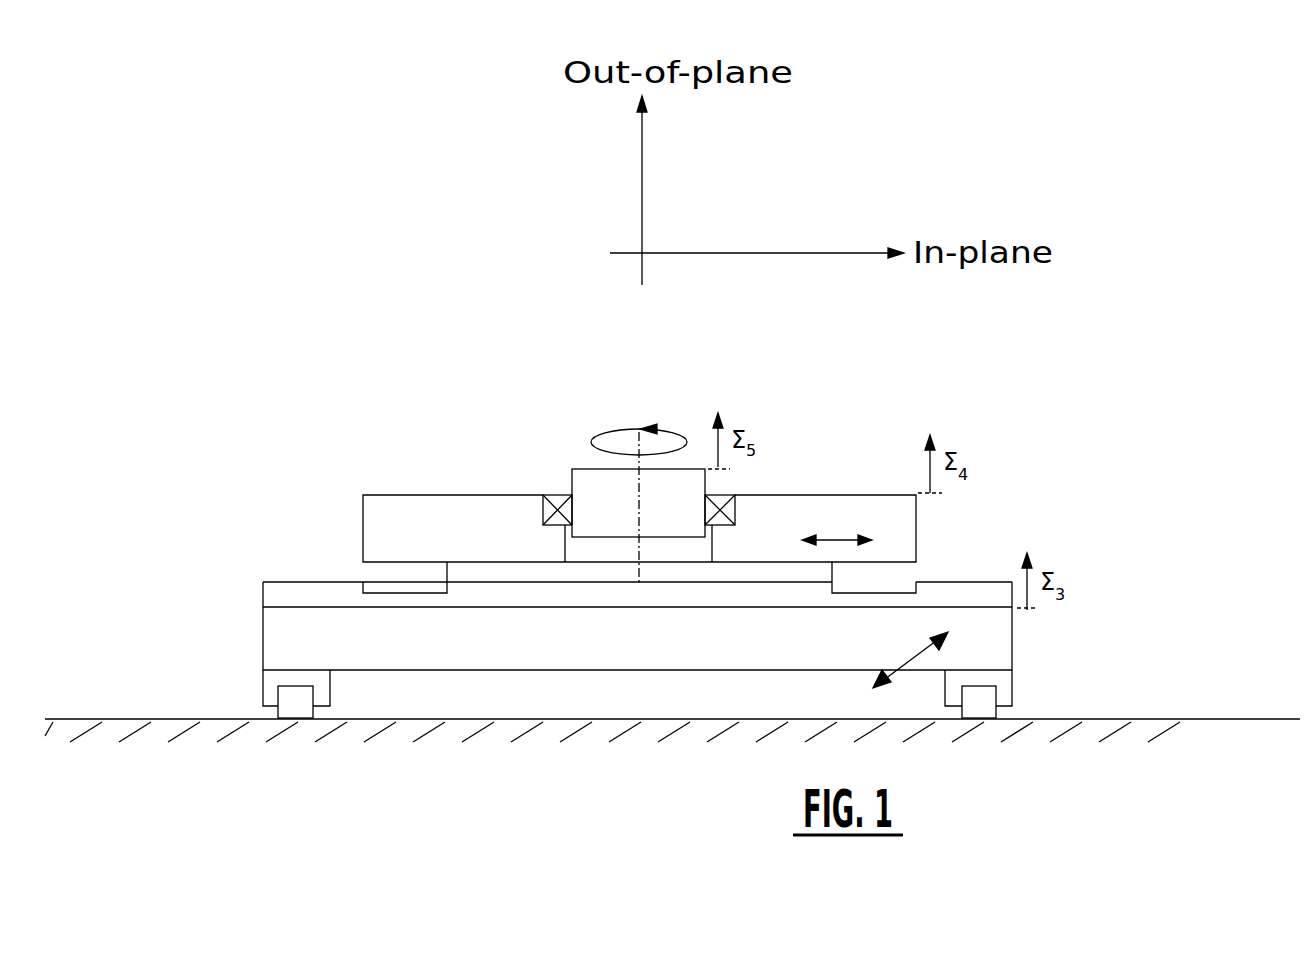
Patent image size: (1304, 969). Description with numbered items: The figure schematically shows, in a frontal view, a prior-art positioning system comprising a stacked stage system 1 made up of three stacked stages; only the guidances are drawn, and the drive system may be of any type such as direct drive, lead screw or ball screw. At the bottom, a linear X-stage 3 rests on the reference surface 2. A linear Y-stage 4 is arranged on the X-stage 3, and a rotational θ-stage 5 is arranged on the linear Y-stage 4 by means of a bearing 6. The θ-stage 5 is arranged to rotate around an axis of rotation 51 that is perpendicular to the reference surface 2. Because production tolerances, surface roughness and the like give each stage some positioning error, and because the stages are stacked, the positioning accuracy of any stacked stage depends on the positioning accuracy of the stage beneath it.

The stacked stage system 1 is at (1090, 423).
The reference surface 2 is at (1145, 723).
The linear X-stage 3 is at (990, 642).
The linear Y-stage 4 is at (394, 510).
The rotational θ-stage 5 is at (593, 482).
The axis of rotation 51 is at (639, 432).
The bearing 6 is at (740, 511).